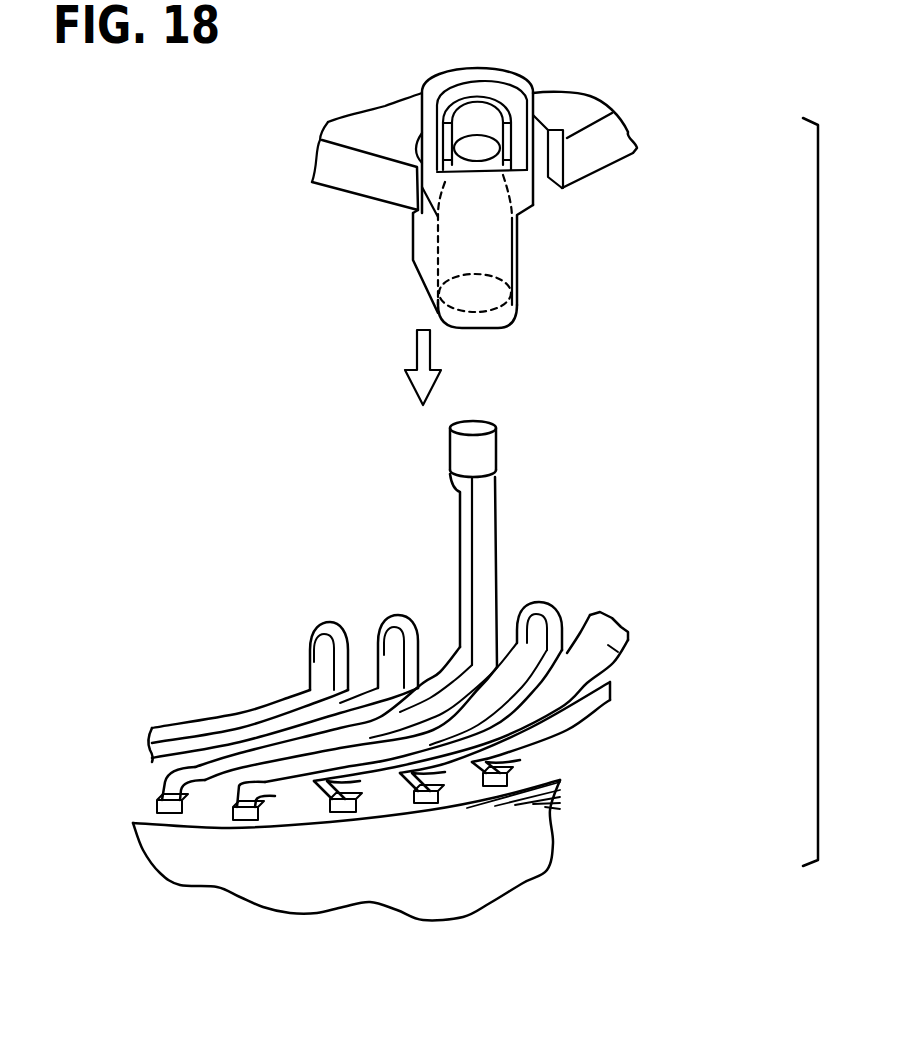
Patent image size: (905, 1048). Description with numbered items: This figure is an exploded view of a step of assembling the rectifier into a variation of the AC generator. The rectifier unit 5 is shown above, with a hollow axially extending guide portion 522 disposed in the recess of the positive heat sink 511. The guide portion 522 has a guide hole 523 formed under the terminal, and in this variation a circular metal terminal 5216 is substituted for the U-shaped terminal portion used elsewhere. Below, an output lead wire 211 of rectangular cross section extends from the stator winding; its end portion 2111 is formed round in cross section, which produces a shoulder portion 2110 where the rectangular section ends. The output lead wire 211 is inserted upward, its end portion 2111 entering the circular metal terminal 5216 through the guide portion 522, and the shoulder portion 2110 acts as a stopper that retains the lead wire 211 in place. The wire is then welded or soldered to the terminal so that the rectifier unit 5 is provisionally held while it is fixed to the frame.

The rectifier unit 5 is at (613, 72).
The circular metal terminal 5216 is at (472, 96).
The positive heat sink 511 is at (578, 168).
The guide hole 523 is at (473, 260).
The guide portion 522 is at (520, 307).
The output lead wire 211 is at (598, 508).
The end portion 2111 is at (488, 452).
The shoulder portion 2110 is at (477, 560).